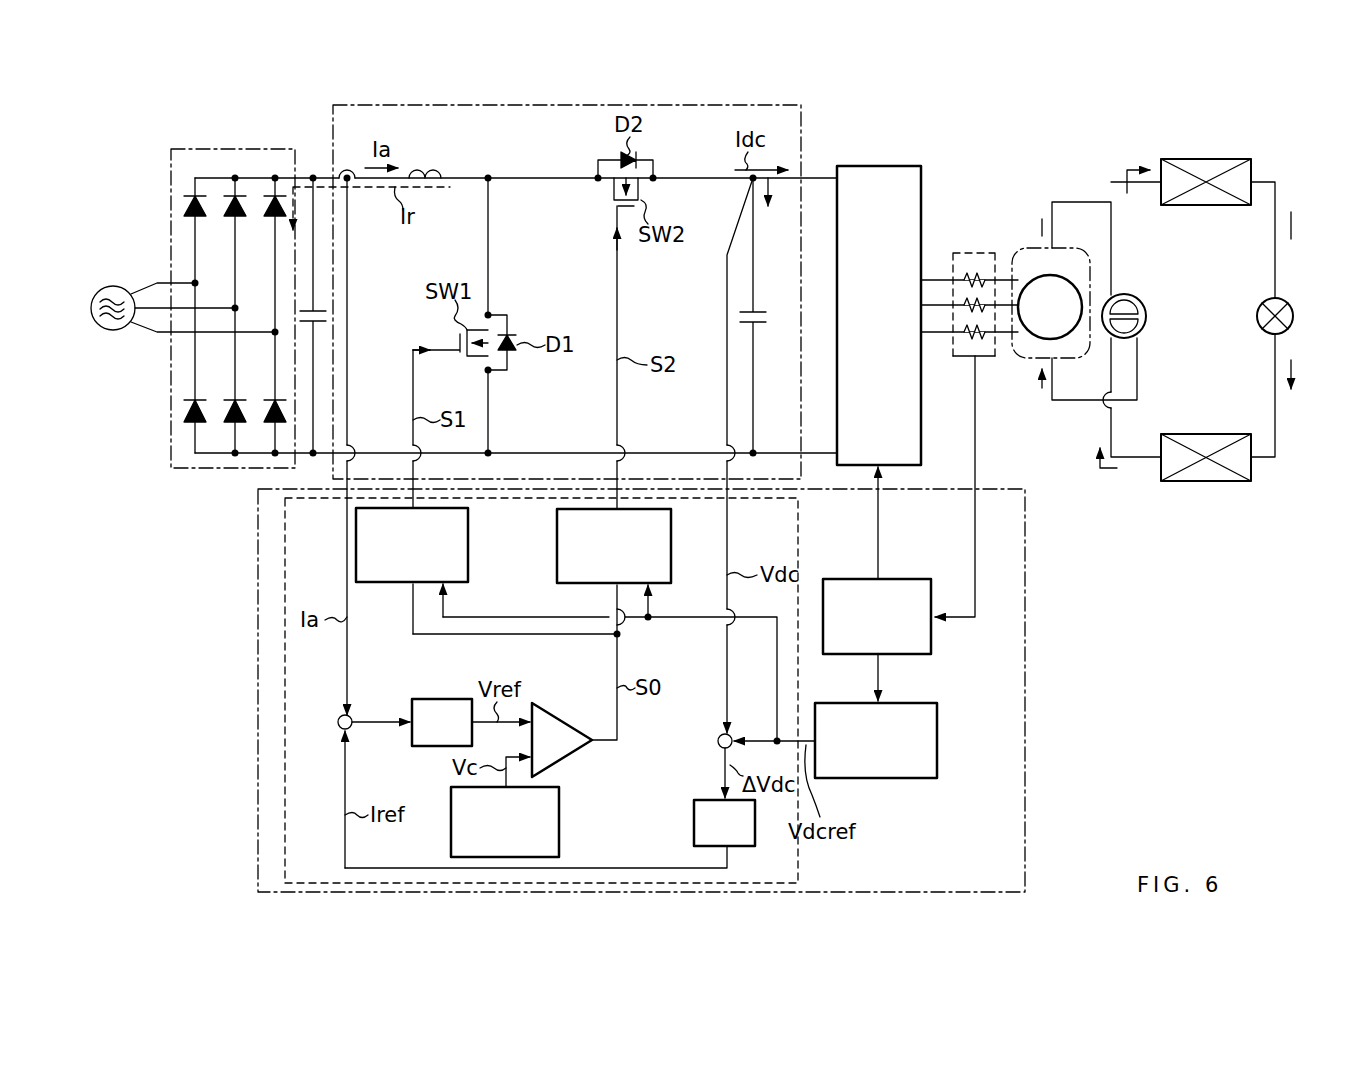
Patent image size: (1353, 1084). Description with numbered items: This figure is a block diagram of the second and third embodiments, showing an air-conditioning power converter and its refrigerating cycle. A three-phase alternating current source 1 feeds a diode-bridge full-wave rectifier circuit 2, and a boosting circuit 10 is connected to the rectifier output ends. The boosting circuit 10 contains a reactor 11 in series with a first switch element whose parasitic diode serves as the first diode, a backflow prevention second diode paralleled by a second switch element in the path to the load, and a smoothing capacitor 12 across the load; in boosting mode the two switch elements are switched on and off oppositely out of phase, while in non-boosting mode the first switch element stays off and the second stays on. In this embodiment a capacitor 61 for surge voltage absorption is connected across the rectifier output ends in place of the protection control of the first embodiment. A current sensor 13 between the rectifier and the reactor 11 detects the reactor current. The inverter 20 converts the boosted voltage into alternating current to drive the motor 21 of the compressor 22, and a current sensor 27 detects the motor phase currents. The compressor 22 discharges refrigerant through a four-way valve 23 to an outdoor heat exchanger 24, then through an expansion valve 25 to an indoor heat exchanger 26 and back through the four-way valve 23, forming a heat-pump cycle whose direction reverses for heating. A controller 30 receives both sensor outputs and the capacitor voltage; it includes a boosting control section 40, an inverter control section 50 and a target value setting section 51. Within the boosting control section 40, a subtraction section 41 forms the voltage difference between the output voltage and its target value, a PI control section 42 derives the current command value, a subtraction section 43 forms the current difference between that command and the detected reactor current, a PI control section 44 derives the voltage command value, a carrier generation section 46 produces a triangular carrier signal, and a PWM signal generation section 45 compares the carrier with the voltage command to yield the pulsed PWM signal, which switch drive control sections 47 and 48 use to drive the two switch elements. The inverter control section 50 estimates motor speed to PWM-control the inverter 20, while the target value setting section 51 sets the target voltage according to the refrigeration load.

The three-phase alternating current source 1 is at (113, 286).
The full-wave rectifier circuit 2 is at (233, 149).
The boosting circuit 10 is at (333, 110).
The reactor 11 is at (425, 170).
The smoothing capacitor 12 is at (766, 312).
The current sensor 13 is at (345, 171).
The inverter 20 is at (878, 166).
The motor 21 is at (1065, 278).
The compressor 22 is at (1018, 250).
The four-way valve 23 is at (1146, 316).
The outdoor heat exchanger 24 is at (1205, 159).
The expansion valve 25 is at (1281, 304).
The indoor heat exchanger 26 is at (1205, 434).
The current sensor 27 is at (963, 253).
The controller 30 is at (258, 545).
The boosting control section 40 is at (285, 635).
The subtraction section 41 is at (731, 736).
The PI control section 42 is at (700, 800).
The subtraction section 43 is at (352, 729).
The PI control section 44 is at (440, 699).
The PWM signal generation section 45 is at (564, 723).
The carrier generation section 46 is at (559, 822).
The switch drive control section 47 is at (468, 522).
The switch drive control section 48 is at (557, 568).
The inverter control section 50 is at (905, 579).
The target value setting section 51 is at (900, 780).
The capacitor 61 is at (326, 311).